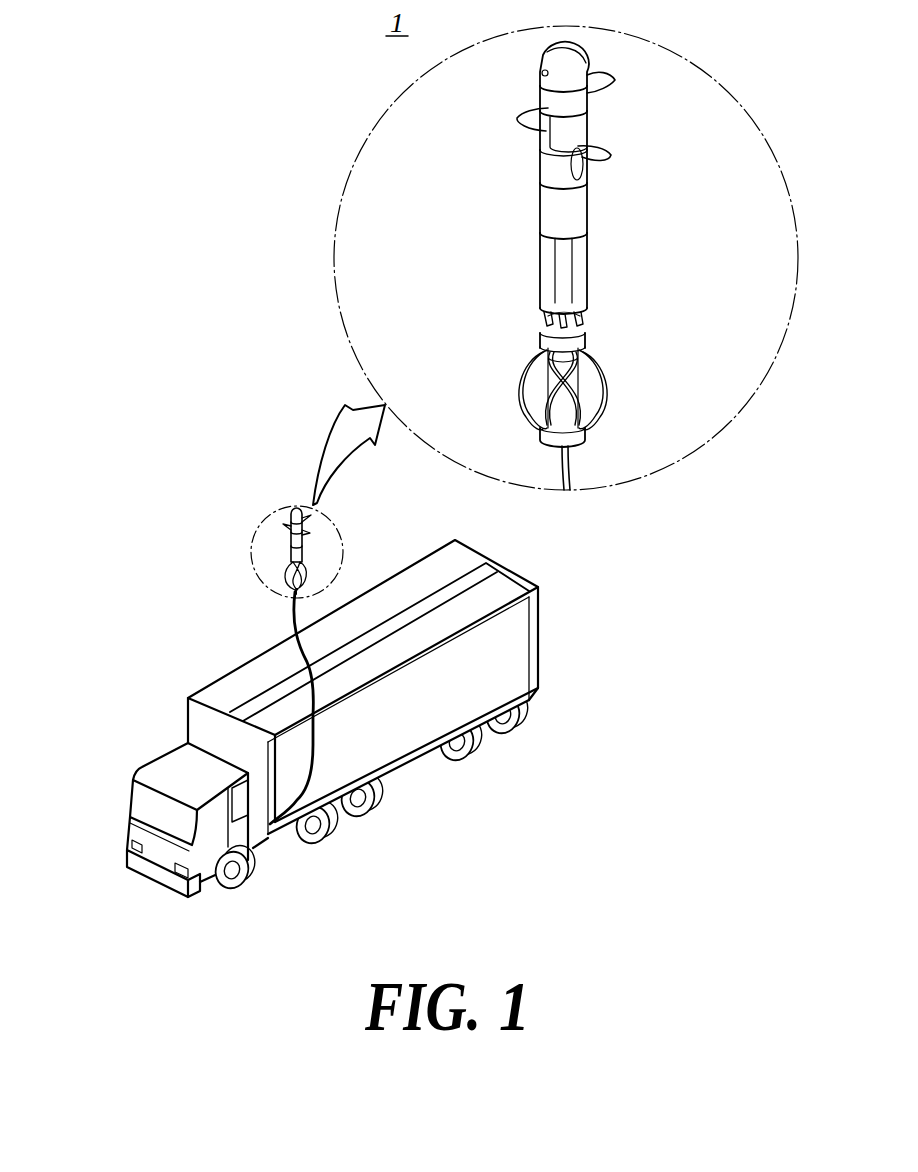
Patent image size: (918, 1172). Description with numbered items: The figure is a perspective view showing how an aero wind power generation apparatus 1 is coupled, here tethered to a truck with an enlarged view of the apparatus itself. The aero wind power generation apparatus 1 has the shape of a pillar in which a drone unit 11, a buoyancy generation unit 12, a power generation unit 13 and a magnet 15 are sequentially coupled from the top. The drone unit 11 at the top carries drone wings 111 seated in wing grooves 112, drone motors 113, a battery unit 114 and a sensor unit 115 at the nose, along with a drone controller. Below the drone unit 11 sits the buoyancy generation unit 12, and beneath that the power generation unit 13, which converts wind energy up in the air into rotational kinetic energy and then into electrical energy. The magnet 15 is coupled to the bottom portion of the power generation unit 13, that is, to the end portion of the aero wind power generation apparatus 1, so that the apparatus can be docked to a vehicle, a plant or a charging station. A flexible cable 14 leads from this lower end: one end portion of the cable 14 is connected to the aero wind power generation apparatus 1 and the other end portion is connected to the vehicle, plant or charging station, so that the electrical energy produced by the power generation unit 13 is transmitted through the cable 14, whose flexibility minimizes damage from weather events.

The aero wind power generation apparatus 1 is at (278, 540).
The drone unit 11 is at (588, 140).
The drone wings 111 is at (613, 86).
The wing grooves 112 is at (547, 131).
The drone motors 113 is at (588, 121).
The battery unit 114 is at (636, 161).
The sensor unit 115 is at (540, 89).
The buoyancy generation unit 12 is at (548, 268).
The power generation unit 13 is at (615, 367).
The cable 14 is at (569, 468).
The magnet 15 is at (543, 440).